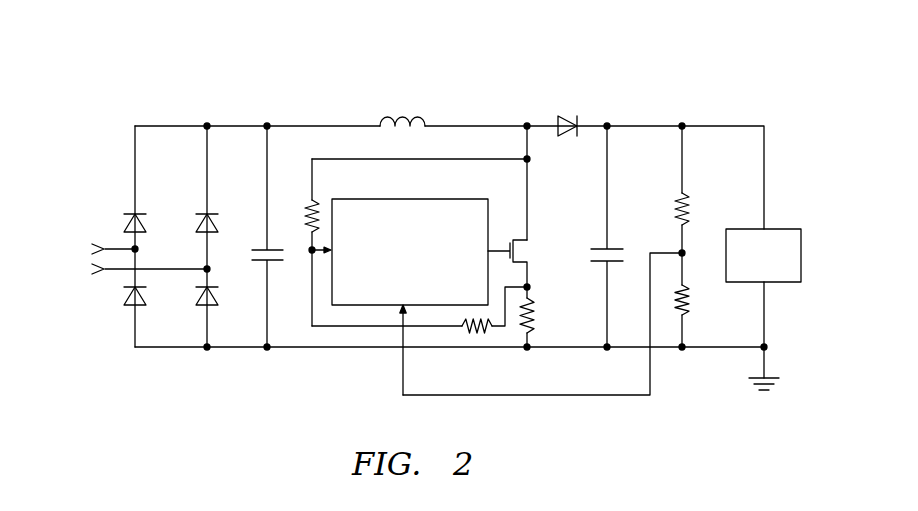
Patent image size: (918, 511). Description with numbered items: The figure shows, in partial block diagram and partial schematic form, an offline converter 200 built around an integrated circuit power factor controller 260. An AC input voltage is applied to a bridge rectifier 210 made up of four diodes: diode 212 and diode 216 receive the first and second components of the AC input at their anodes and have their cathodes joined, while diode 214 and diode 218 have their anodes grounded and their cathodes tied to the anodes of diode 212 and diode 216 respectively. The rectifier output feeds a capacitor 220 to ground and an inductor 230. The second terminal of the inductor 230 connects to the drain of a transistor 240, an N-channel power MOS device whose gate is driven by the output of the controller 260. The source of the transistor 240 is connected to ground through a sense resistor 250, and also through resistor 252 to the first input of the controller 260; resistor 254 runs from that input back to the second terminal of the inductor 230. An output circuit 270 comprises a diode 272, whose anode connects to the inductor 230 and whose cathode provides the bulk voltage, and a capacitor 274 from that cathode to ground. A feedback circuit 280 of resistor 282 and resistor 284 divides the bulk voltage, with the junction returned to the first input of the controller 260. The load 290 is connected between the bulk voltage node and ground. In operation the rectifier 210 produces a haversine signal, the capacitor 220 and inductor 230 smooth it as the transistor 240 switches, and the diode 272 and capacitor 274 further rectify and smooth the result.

The offline converter 200 is at (120, 48).
The bridge rectifier 210 is at (163, 108).
The diode 212 is at (124, 214).
The diode 214 is at (124, 305).
The diode 216 is at (197, 214).
The diode 218 is at (197, 305).
The capacitor 220 is at (255, 250).
The inductor 230 is at (418, 117).
The transistor 240 is at (515, 238).
The sense resistor 250 is at (540, 316).
The resistor 252 is at (475, 336).
The resistor 254 is at (308, 203).
The integrated circuit power factor controller 260 is at (393, 199).
The output circuit 270 is at (560, 78).
The diode 272 is at (580, 115).
The capacitor 274 is at (598, 248).
The feedback circuit 280 is at (675, 78).
The resistor 282 is at (695, 201).
The resistor 284 is at (690, 312).
The load 290 is at (785, 228).